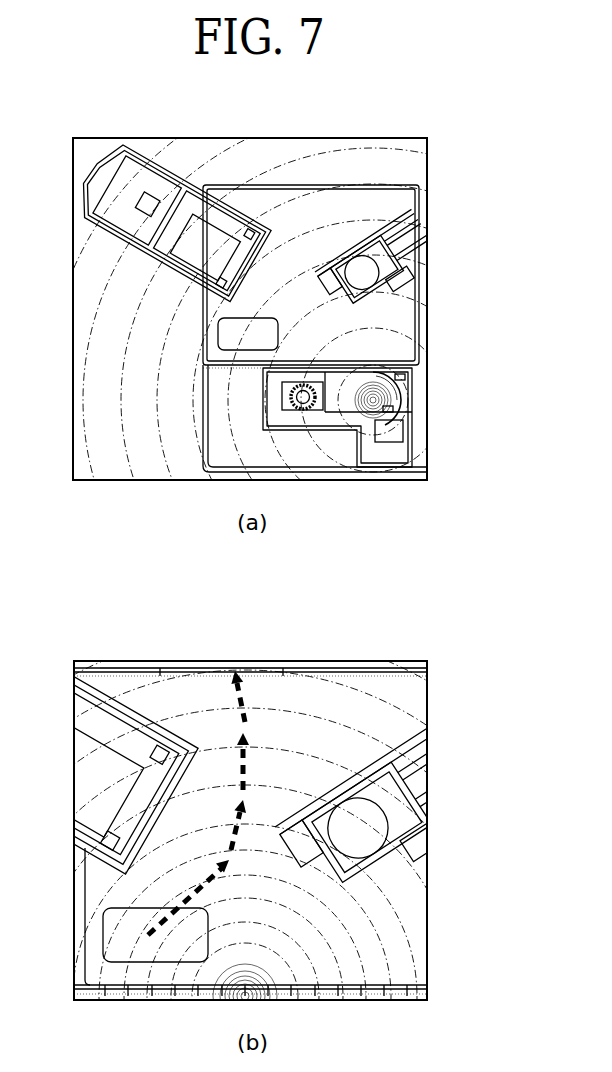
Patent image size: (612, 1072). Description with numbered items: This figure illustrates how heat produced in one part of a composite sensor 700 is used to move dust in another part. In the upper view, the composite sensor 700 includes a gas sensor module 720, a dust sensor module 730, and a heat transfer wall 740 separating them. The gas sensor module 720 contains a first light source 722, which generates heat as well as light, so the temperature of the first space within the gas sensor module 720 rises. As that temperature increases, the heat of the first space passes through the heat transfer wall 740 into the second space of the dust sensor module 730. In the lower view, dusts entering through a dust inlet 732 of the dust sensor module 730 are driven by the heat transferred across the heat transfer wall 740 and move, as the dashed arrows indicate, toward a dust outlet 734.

The composite sensor 700 is at (357, 138).
The dust sensor module 730 is at (283, 188).
The heat transfer wall 740 is at (404, 368).
The gas sensor module 720 is at (410, 402).
The first light source 722 is at (392, 428).
The dust inlet 732 is at (103, 935).
The dust outlet 734 is at (205, 668).